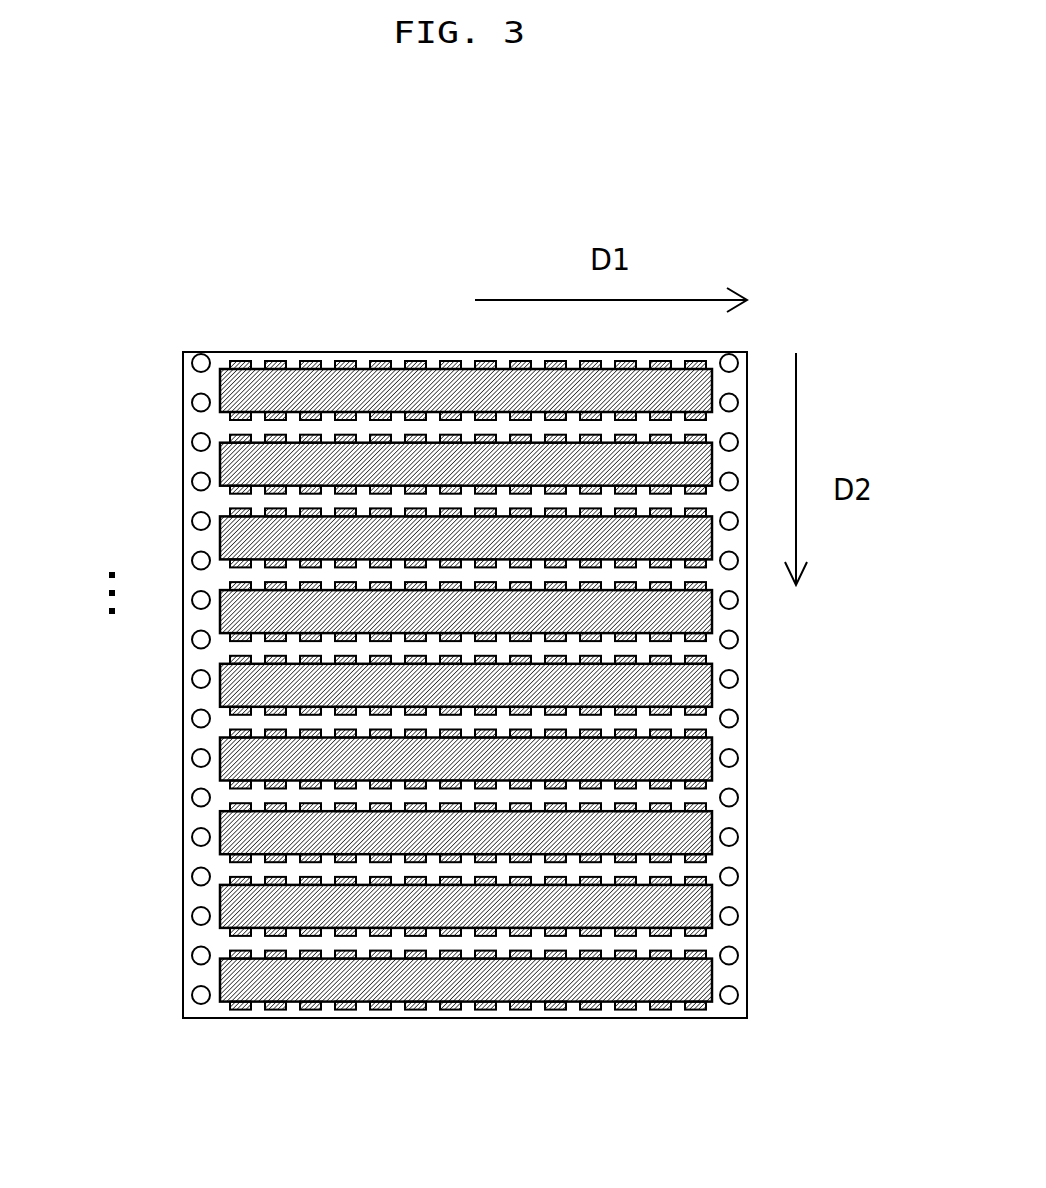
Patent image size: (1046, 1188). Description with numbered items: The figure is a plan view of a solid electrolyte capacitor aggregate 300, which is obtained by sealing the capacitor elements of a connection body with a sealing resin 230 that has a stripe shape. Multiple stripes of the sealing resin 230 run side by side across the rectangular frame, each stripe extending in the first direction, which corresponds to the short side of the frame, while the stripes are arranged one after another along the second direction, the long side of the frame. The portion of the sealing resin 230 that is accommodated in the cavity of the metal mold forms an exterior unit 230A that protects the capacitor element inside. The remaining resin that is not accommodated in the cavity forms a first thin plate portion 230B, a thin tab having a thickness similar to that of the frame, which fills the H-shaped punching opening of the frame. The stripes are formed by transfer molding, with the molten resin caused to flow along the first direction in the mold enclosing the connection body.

The solid electrolyte capacitor aggregate 300 is at (485, 196).
The sealing resin 230 is at (382, 611).
The exterior unit 230A is at (333, 307).
The first thin plate portion 230B is at (232, 416).